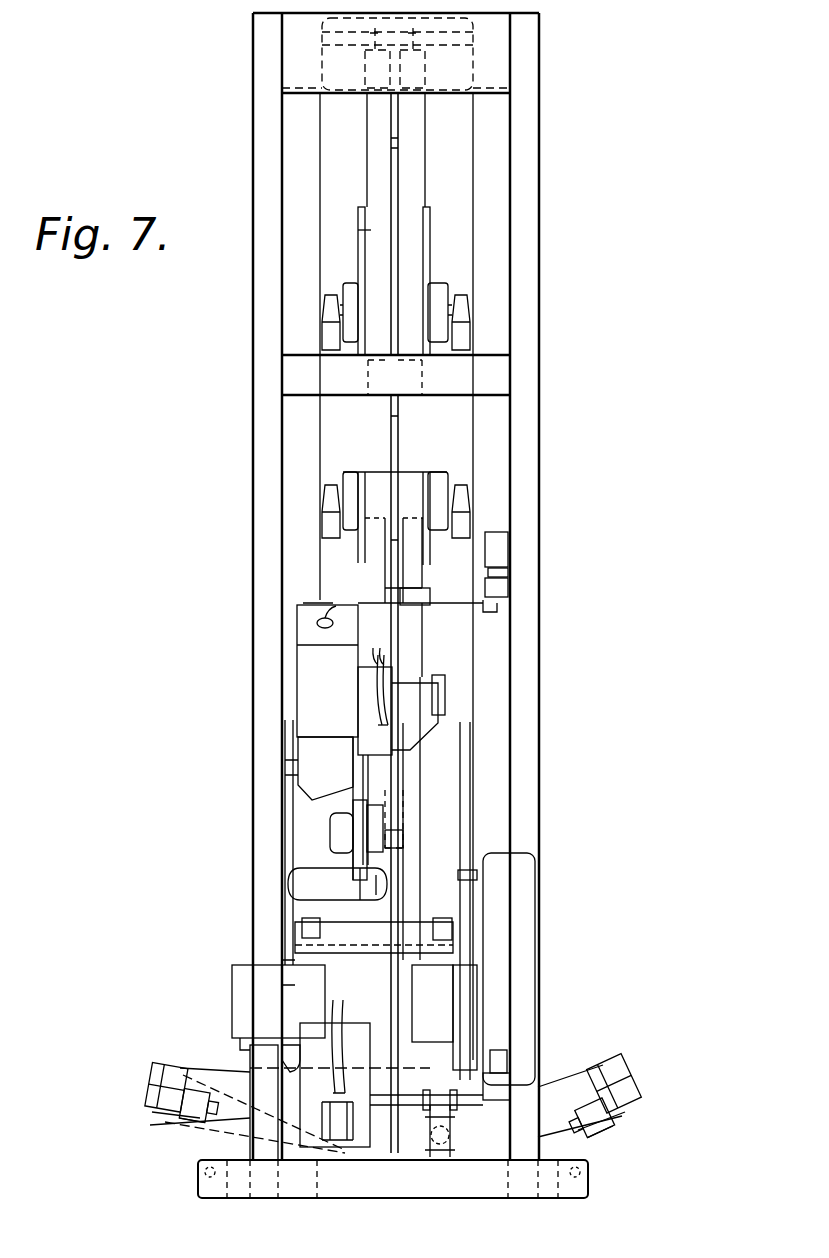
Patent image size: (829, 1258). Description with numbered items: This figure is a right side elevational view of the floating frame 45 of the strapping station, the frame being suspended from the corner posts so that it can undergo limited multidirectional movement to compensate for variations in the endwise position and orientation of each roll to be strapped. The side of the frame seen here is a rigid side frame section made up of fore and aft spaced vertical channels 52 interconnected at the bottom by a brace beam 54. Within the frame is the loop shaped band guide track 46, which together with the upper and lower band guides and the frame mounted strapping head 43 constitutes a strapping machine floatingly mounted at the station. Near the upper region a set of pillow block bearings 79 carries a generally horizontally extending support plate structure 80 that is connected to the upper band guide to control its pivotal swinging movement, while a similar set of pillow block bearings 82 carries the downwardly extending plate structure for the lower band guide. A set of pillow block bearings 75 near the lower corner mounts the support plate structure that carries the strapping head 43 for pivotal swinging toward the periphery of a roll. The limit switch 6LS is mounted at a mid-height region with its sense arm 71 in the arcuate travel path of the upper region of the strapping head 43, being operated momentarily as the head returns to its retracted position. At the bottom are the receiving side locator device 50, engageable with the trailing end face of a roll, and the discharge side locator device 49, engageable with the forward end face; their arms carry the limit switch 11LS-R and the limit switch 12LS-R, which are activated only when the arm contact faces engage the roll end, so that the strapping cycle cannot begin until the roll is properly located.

The floating frame 45 is at (550, 52).
The vertical channels 52 is at (528, 215).
The band guide track 46 is at (401, 449).
The support plate structure 80 is at (357, 242).
The pillow block bearings 79 is at (330, 297).
The pillow block bearings 82 is at (330, 485).
The limit switch 6LS is at (497, 549).
The sense arm 71 is at (487, 597).
The strapping head 43 is at (348, 675).
The pillow block bearings 75 is at (282, 1058).
The brace beam 54 is at (485, 1190).
The receiving side locator device 50 is at (150, 1084).
The limit switch 11LS-R is at (190, 1105).
The discharge side locator device 49 is at (650, 1087).
The limit switch 12LS-R is at (607, 1120).